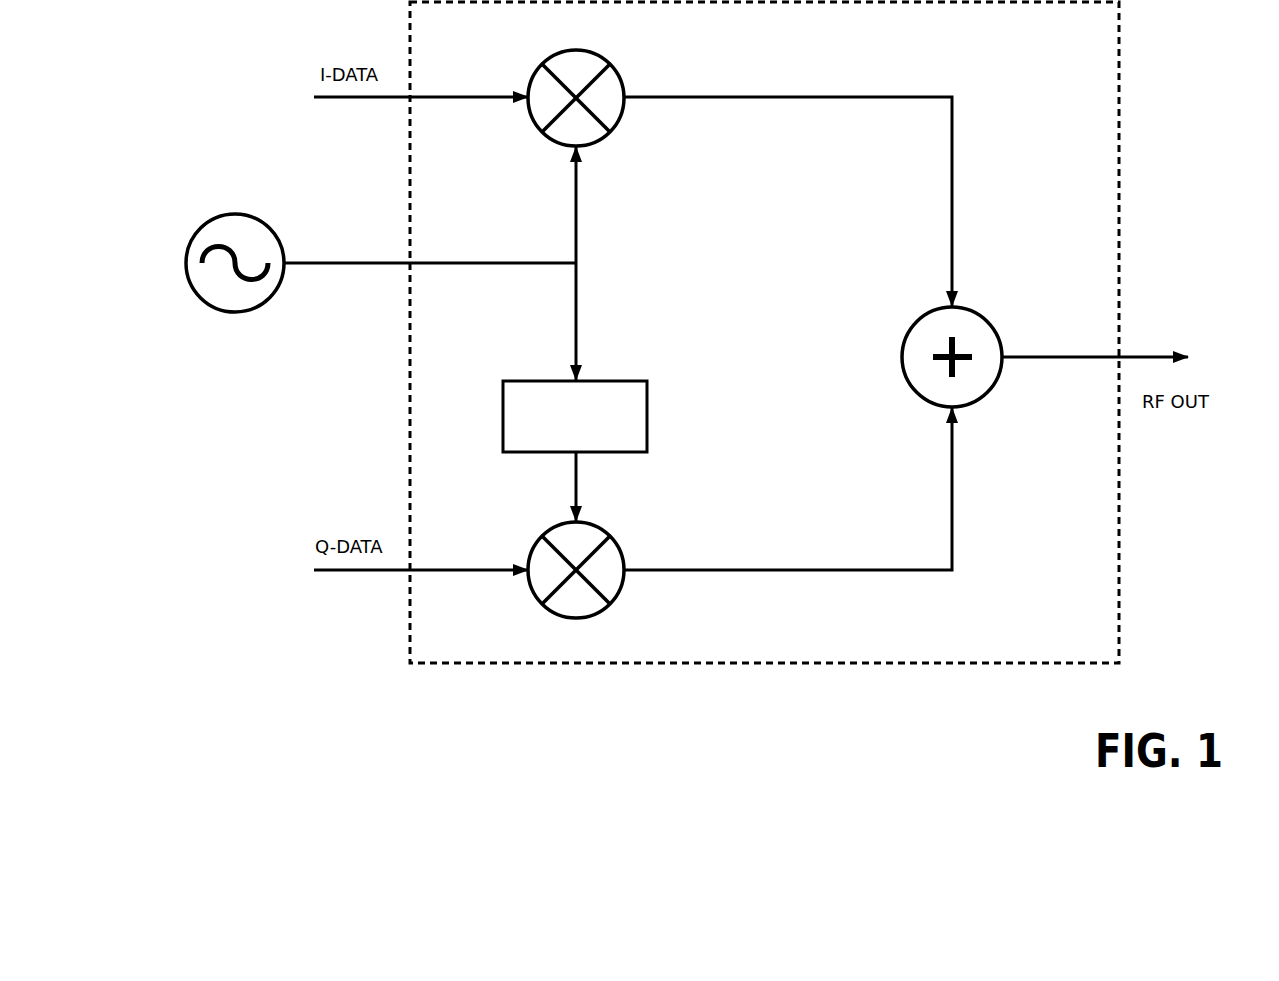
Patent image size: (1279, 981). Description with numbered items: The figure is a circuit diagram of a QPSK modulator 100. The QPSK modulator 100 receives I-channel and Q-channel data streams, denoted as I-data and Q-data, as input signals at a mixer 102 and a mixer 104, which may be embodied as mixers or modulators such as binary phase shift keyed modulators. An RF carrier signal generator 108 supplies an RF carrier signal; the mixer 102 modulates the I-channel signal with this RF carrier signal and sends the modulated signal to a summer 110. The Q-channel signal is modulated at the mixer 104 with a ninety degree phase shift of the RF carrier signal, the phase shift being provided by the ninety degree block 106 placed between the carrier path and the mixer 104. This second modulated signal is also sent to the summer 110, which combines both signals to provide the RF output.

The QPSK modulator 100 is at (1120, 103).
The mixer 102 is at (577, 48).
The mixer 104 is at (576, 618).
The 90 degree phase shifter 106 is at (648, 412).
The RF carrier signal generator 108 is at (233, 213).
The summer 110 is at (980, 398).